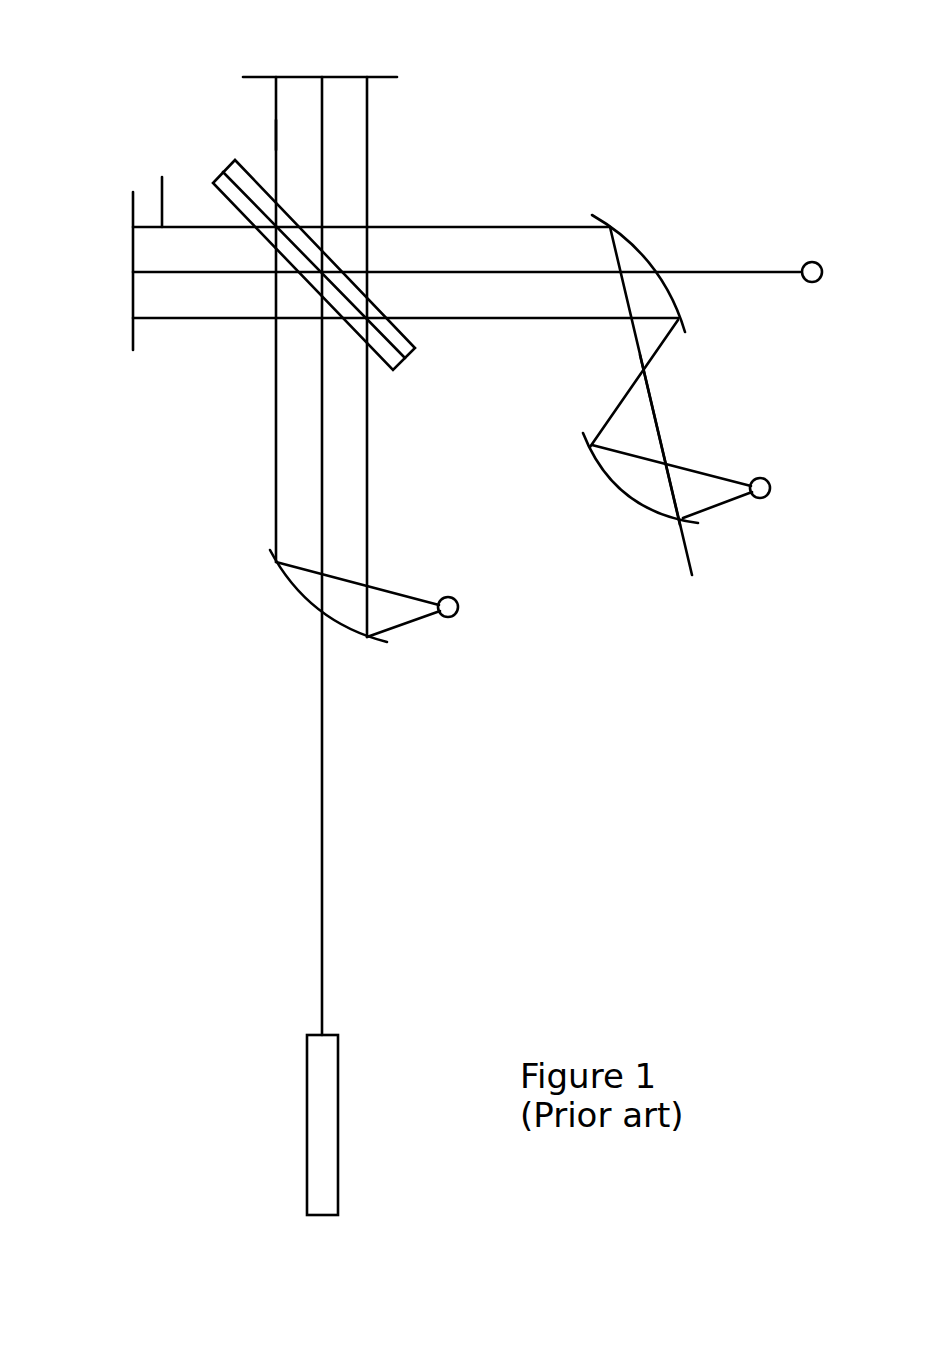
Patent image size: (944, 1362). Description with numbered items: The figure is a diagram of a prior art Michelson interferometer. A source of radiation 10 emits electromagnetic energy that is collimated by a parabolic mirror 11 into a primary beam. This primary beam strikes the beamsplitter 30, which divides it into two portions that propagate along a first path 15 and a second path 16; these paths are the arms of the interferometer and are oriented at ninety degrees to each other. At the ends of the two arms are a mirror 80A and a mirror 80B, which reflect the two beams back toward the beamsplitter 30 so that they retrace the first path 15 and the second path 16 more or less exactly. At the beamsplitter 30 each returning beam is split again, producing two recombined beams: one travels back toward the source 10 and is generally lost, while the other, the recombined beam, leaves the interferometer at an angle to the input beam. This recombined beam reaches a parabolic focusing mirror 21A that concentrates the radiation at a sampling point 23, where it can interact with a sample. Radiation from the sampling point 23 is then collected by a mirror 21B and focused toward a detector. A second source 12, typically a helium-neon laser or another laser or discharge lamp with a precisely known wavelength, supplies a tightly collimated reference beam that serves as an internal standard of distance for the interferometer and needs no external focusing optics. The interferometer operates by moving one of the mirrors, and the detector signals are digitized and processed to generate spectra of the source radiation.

The mirror 80A is at (133, 272).
The mirror 80B is at (353, 77).
The first path 15 is at (162, 186).
The second path 16 is at (273, 135).
The beamsplitter 30 is at (405, 353).
The parabolic focusing mirror 21A is at (613, 230).
The mirror 21B is at (676, 525).
The sampling point 23 is at (653, 385).
The source of radiation 10 is at (458, 592).
The parabolic mirror 11 is at (347, 632).
The second source 12 is at (338, 1183).